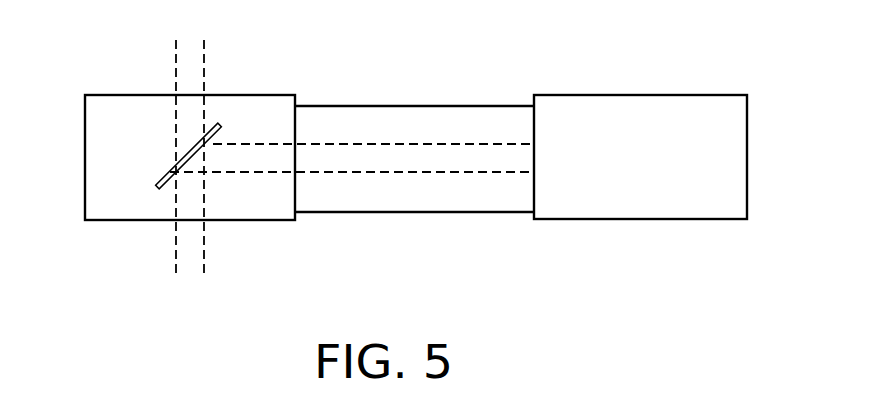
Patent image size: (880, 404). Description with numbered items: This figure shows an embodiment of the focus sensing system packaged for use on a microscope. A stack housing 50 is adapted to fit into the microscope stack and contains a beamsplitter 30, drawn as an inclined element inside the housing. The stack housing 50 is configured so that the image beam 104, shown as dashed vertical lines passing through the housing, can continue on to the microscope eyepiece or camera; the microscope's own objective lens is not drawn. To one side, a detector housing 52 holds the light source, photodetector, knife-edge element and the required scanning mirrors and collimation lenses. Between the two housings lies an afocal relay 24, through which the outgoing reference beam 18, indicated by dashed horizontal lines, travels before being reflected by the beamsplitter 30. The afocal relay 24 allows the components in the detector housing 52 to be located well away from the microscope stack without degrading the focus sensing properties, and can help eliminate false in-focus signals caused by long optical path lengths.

The outgoing reference beam 18 is at (392, 156).
The afocal relay 24 is at (388, 204).
The beamsplitter 30 is at (160, 178).
The stack housing 50 is at (98, 194).
The detector housing 52 is at (733, 179).
The image beam 104 is at (192, 68).